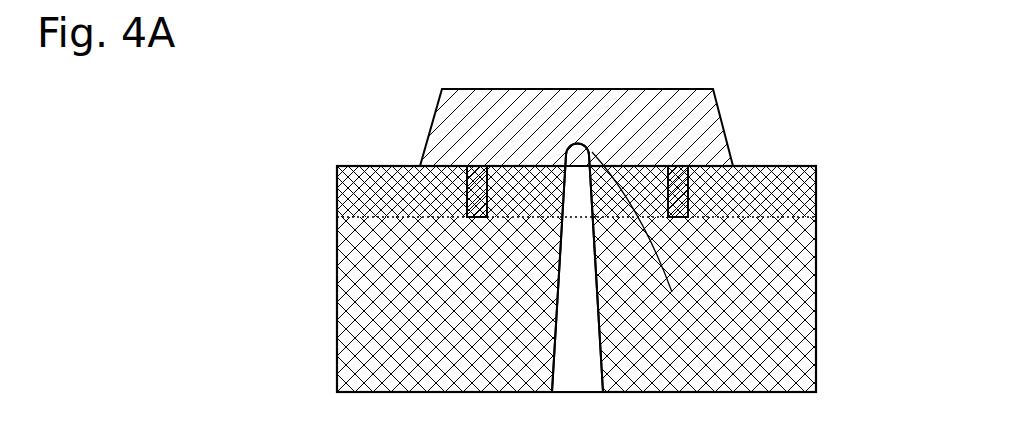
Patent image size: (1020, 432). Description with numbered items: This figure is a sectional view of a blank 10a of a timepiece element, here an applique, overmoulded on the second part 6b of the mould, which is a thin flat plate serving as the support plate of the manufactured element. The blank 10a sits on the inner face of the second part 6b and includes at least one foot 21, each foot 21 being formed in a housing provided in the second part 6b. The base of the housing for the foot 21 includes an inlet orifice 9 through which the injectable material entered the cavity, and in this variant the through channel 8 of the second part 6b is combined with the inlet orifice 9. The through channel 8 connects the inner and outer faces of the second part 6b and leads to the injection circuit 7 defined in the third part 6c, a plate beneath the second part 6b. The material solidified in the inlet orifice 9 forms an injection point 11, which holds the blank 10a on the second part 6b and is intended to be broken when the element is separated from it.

The blank 10a is at (620, 108).
The second part 6b is at (780, 192).
The foot 21 is at (470, 199).
The inlet orifice 9 is at (751, 222).
The injection point 11 is at (625, 185).
The through channel 8 is at (668, 293).
The injection circuit 7 is at (566, 340).
The third part 6c is at (780, 367).